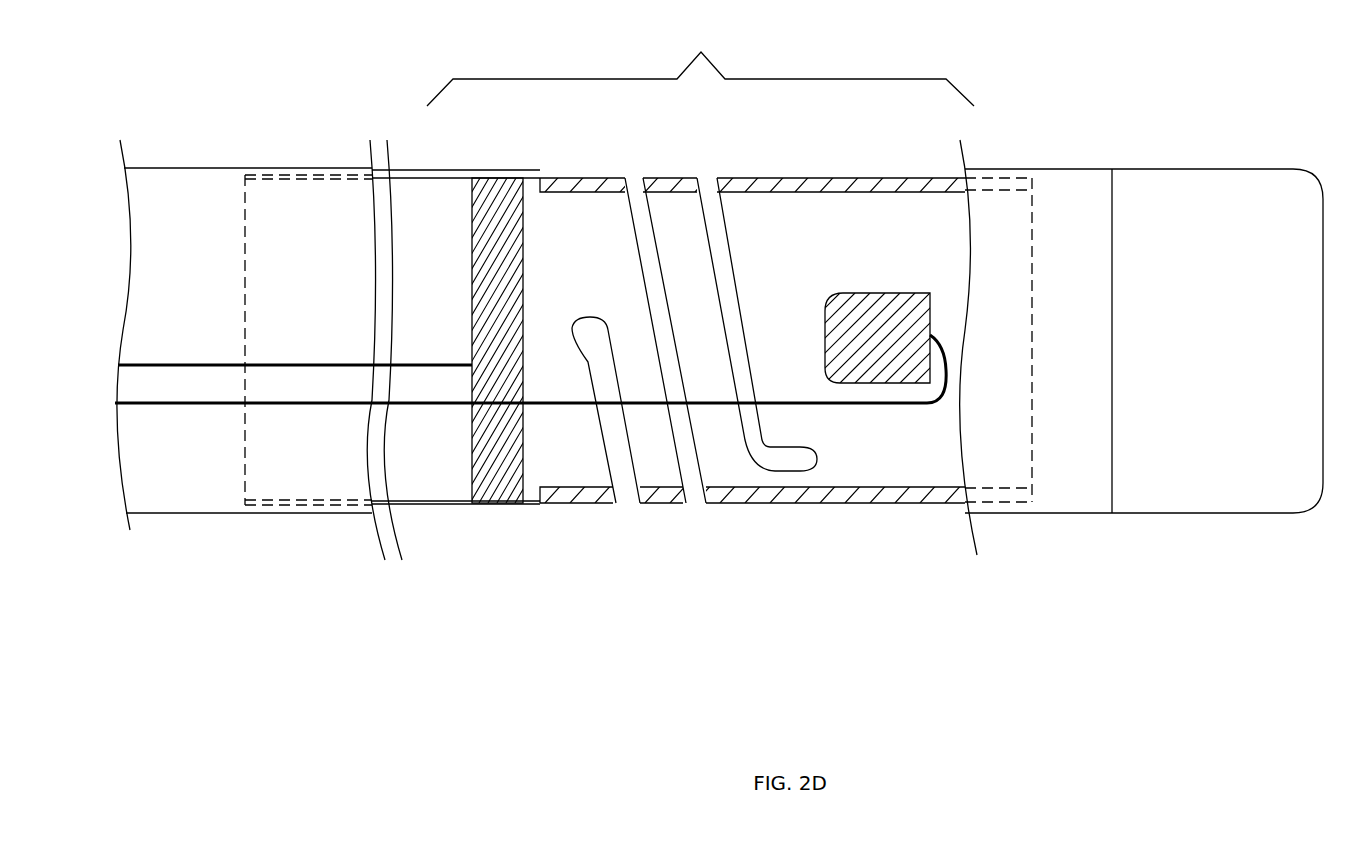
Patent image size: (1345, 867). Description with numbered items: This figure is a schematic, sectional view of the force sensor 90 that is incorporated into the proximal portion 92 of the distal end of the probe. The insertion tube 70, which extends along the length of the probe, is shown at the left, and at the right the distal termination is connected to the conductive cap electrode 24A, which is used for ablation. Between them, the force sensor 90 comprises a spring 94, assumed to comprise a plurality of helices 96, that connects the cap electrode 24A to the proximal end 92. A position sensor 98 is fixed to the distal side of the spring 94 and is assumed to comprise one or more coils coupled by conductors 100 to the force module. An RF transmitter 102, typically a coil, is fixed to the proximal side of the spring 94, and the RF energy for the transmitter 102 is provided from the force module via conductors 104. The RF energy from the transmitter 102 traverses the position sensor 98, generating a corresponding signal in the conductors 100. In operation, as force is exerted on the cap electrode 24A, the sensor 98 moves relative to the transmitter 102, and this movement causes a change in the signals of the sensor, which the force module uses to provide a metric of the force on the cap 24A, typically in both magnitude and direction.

The conductive cap electrode 24A is at (1228, 515).
The insertion tube 70 is at (170, 515).
The force sensor 90 is at (700, 66).
The proximal portion of the distal end 92 is at (245, 515).
The spring 94 is at (890, 505).
The helices 96 is at (705, 178).
The position sensor 98 is at (878, 293).
The conductors 100 is at (312, 408).
The RF transmitter 102 is at (523, 283).
The conductors 104 is at (327, 362).